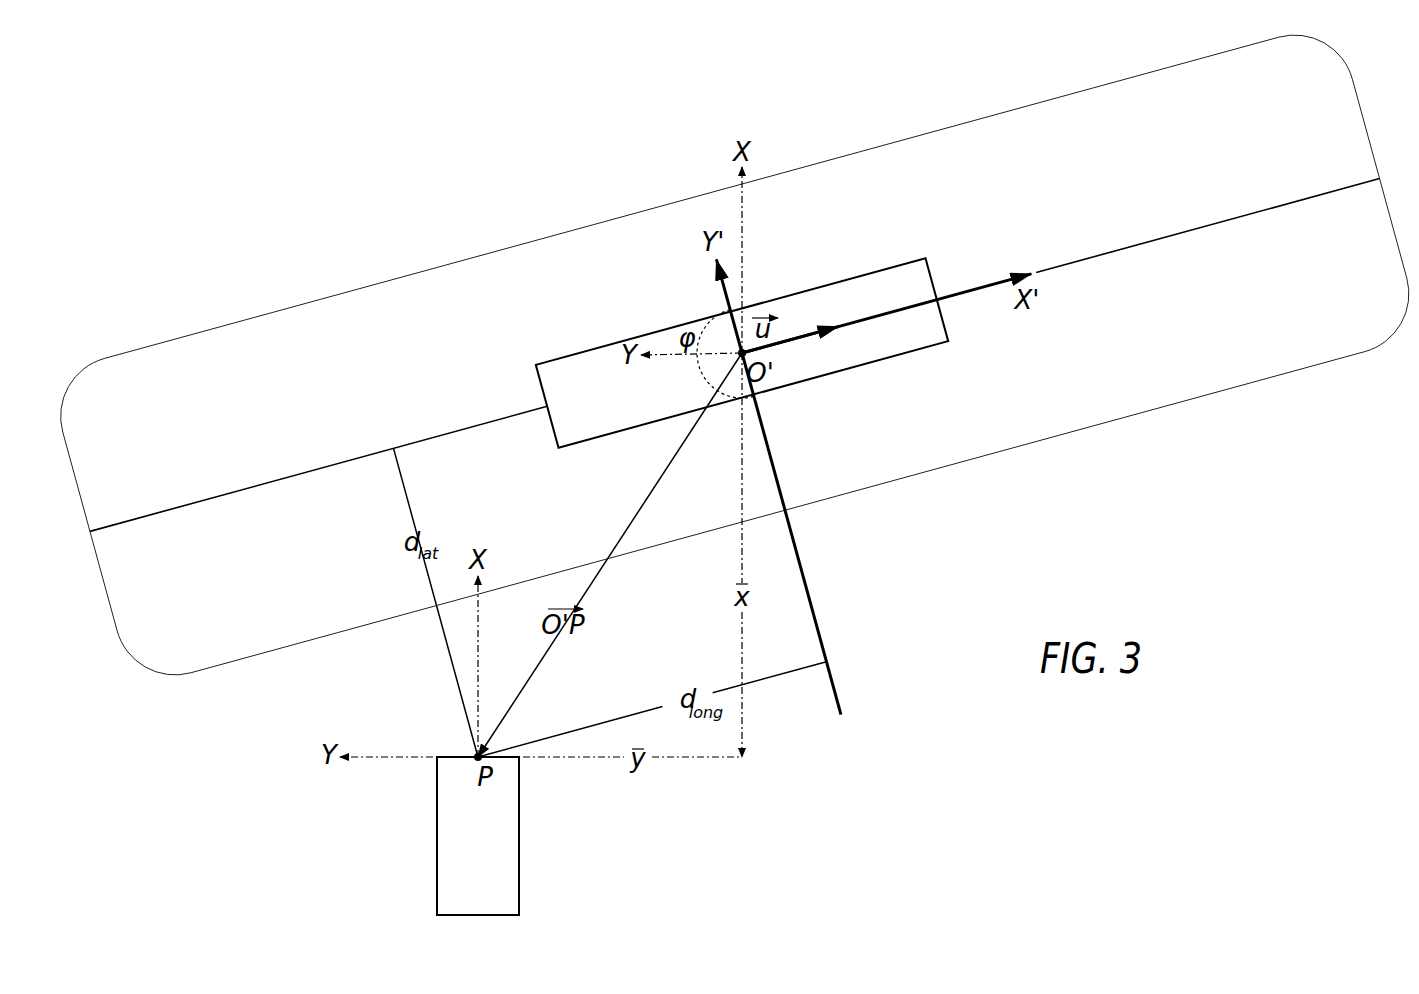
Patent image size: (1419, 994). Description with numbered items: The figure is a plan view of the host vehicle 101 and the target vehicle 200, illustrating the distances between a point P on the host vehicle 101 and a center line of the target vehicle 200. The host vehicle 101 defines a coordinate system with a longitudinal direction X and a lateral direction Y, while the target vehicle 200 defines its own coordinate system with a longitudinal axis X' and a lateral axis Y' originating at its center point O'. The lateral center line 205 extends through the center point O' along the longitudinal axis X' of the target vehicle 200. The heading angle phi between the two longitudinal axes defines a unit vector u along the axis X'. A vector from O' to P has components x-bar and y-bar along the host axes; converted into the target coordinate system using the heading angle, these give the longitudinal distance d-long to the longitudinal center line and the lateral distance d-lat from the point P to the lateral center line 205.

The host vehicle 101 is at (437, 887).
The target vehicle 200 is at (880, 270).
The lateral center line 205 is at (1138, 244).